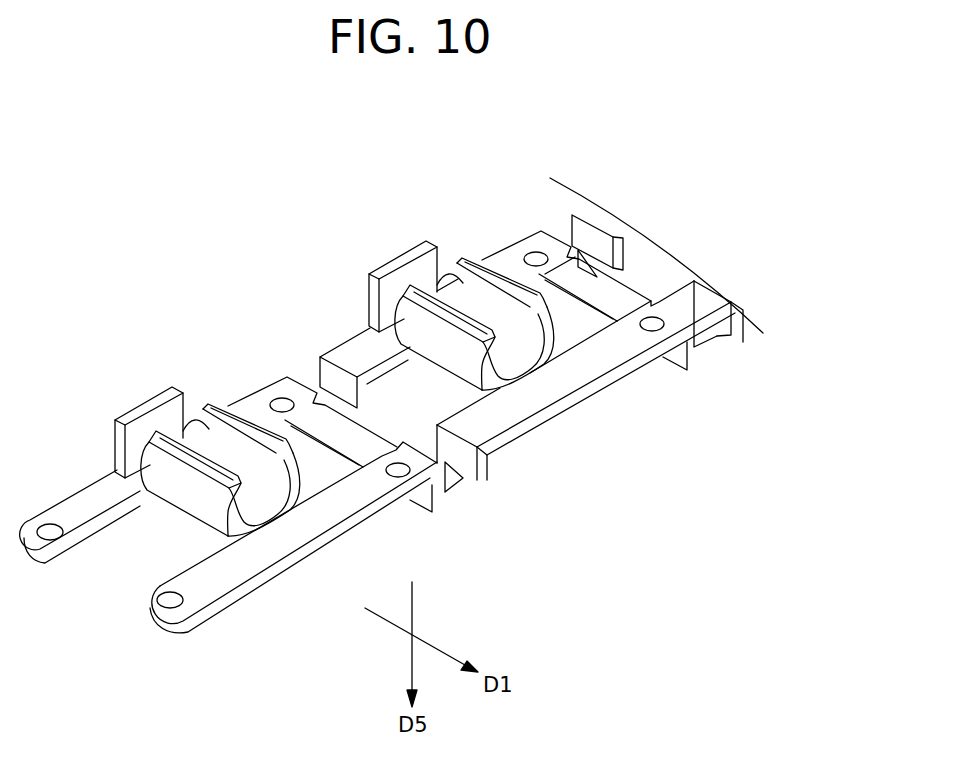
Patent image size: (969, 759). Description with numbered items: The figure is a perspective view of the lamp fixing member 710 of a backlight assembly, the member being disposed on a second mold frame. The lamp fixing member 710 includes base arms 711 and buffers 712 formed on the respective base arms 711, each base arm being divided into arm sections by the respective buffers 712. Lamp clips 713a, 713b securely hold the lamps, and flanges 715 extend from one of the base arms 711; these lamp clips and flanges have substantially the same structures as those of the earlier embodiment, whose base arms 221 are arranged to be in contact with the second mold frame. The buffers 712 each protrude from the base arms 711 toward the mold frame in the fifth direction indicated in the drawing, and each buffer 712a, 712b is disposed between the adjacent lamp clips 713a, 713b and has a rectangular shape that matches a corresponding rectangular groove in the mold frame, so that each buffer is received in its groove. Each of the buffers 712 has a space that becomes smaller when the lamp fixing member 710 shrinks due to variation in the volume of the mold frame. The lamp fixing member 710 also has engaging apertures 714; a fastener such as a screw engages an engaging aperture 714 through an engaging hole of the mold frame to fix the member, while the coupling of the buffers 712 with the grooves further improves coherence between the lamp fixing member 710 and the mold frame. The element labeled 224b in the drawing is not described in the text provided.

The lamp fixing member 710 is at (221, 119).
The base arms 711 is at (600, 360).
The buffers 712 is at (646, 418).
The buffer 712a is at (463, 478).
The buffer 712b is at (754, 342).
The lamp clip 713a is at (478, 254).
The lamp clip 713b is at (226, 392).
The engaging apertures 714 is at (147, 590).
The flanges 715 is at (400, 260).
The base arms 221 is at (513, 358).
The contact clip 224b is at (410, 321).